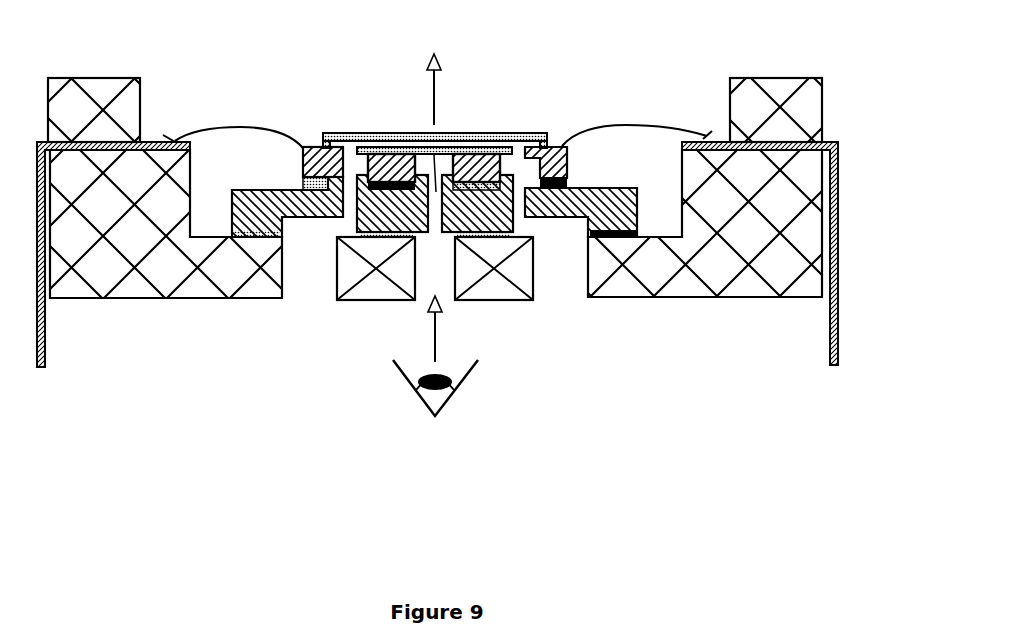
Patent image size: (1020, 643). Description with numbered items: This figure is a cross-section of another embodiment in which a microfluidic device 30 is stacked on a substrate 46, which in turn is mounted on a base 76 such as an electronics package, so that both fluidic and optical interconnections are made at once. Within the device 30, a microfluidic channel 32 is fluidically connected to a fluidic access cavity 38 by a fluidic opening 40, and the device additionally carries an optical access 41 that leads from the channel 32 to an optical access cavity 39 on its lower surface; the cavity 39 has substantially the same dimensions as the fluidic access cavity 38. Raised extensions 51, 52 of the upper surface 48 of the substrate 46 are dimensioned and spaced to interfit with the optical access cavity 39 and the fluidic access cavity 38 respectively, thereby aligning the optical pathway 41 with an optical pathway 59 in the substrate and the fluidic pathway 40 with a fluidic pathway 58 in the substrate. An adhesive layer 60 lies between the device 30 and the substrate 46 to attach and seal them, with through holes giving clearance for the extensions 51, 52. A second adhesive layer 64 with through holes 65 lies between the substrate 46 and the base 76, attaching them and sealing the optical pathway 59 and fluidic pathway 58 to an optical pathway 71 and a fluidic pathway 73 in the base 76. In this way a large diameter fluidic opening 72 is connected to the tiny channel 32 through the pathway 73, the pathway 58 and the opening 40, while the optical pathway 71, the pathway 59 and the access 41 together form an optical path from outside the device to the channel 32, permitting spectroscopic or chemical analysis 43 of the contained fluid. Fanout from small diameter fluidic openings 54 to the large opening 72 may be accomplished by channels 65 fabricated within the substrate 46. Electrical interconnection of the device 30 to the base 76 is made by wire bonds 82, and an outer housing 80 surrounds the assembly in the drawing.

The microfluidic device 30 is at (557, 148).
The microfluidic channel 32 is at (520, 145).
The fluidic access cavity 38 is at (317, 147).
The optical access cavity 39 is at (470, 148).
The fluidic opening 40 is at (350, 155).
The optical access 41 is at (443, 152).
The spectroscopic or chemical analysis 43 is at (448, 407).
The substrate 46 is at (632, 186).
The upper surface 48 is at (622, 188).
The extension 51 is at (402, 150).
The extension 52 is at (305, 173).
The small diameter fluidic opening 54 is at (547, 148).
The fluidic pathway 58 is at (297, 188).
The optical pathway 59 is at (423, 152).
The adhesive layer 60 is at (570, 180).
The adhesive layer 64 is at (638, 227).
The through holes 65 is at (548, 227).
The optical pathway 71 is at (447, 279).
The large diameter fluidic opening 72 is at (320, 285).
The fluidic pathway 73 is at (577, 253).
The base 76 is at (757, 284).
The housing shell 80 is at (838, 155).
The wire bonds 82 is at (230, 128).